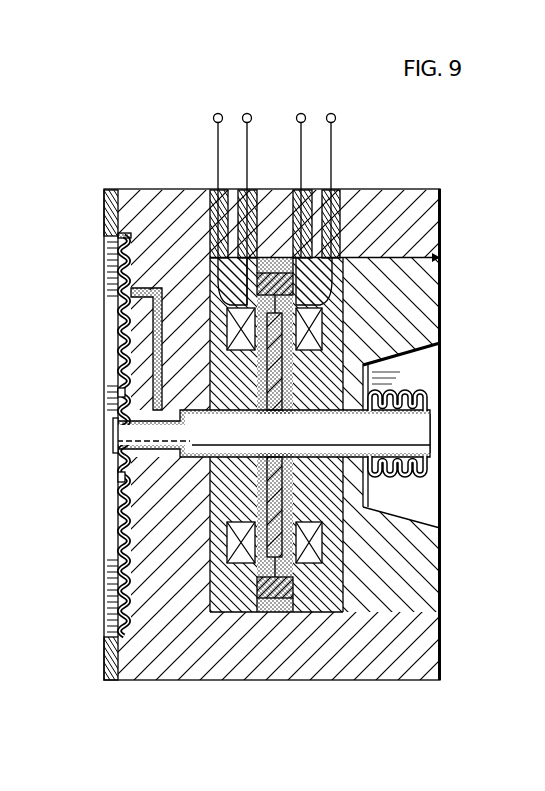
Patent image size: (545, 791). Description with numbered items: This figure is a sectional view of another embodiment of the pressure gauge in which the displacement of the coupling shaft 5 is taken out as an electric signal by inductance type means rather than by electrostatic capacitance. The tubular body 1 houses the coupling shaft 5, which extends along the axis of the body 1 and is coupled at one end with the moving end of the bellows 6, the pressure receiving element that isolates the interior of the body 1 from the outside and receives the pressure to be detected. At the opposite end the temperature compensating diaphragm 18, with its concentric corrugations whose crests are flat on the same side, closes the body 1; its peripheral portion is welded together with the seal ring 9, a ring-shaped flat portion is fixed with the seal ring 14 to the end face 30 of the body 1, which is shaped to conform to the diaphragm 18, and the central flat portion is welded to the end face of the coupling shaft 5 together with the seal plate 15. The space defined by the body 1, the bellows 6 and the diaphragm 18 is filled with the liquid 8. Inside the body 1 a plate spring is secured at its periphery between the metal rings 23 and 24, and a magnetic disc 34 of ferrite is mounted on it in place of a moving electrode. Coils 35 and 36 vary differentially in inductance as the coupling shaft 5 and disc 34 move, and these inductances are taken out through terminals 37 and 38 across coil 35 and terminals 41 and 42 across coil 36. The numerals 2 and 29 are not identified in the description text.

The tubular body 1 is at (435, 219).
The lower housing part 2 is at (235, 608).
The coupling shaft 5 is at (418, 441).
The bellows 6 is at (428, 399).
The liquid 8 is at (122, 321).
The seal ring 9 is at (110, 212).
The seal ring 14 is at (118, 392).
The seal plate 15 is at (113, 437).
The temperature compensating diaphragm 18 is at (120, 272).
The metal ring 23 is at (265, 610).
The metal ring 24 is at (280, 610).
The end block 29 is at (318, 608).
The end face 30 is at (123, 505).
The magnetic disc 34 is at (287, 507).
The coil 35 is at (223, 338).
The coil 36 is at (340, 338).
The terminal 37 is at (221, 112).
The terminal 38 is at (250, 112).
The terminal 41 is at (304, 112).
The terminal 42 is at (333, 112).